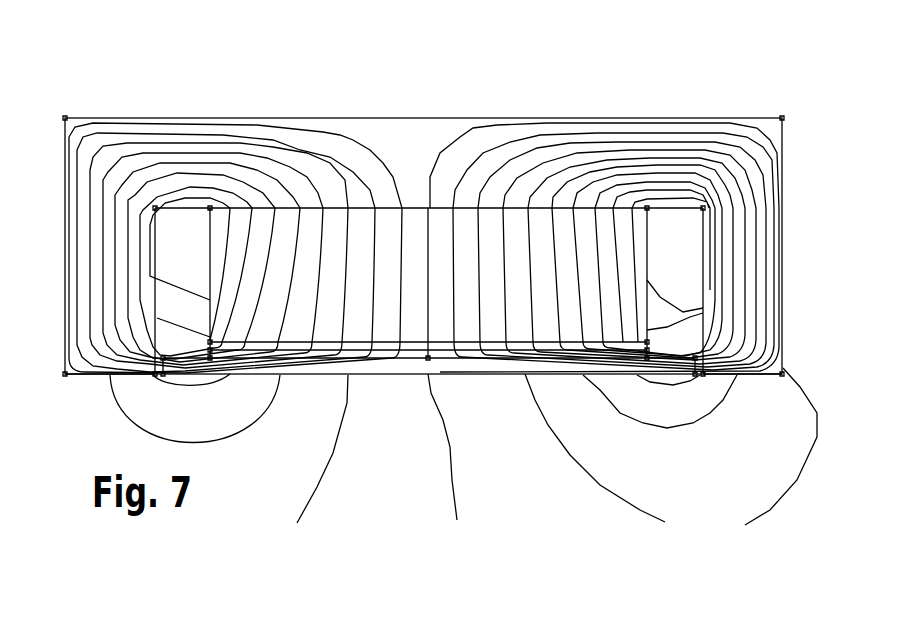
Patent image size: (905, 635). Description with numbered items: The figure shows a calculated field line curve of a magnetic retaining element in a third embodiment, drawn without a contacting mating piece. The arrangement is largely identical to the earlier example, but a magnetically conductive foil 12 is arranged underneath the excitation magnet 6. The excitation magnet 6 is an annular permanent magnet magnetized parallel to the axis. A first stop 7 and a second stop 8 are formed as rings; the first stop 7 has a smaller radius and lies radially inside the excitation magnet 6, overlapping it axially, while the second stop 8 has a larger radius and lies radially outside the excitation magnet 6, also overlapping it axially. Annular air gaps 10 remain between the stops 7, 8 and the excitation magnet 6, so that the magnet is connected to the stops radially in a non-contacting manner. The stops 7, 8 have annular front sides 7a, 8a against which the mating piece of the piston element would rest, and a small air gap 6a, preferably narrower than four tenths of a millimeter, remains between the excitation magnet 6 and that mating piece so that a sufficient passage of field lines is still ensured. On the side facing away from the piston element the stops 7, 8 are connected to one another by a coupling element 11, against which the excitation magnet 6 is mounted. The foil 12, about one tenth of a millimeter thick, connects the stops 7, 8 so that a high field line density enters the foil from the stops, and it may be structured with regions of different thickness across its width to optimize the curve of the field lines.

The excitation magnet 6 is at (438, 230).
The air gap 6a is at (445, 352).
The first stop 7 is at (758, 257).
The annular front side of first stop 7a is at (760, 378).
The second stop 8 is at (82, 255).
The annular front side of second stop 8a is at (90, 378).
The annular air gaps 10 is at (168, 230).
The coupling element 11 is at (343, 148).
The magnetically conductive foil 12 is at (412, 368).